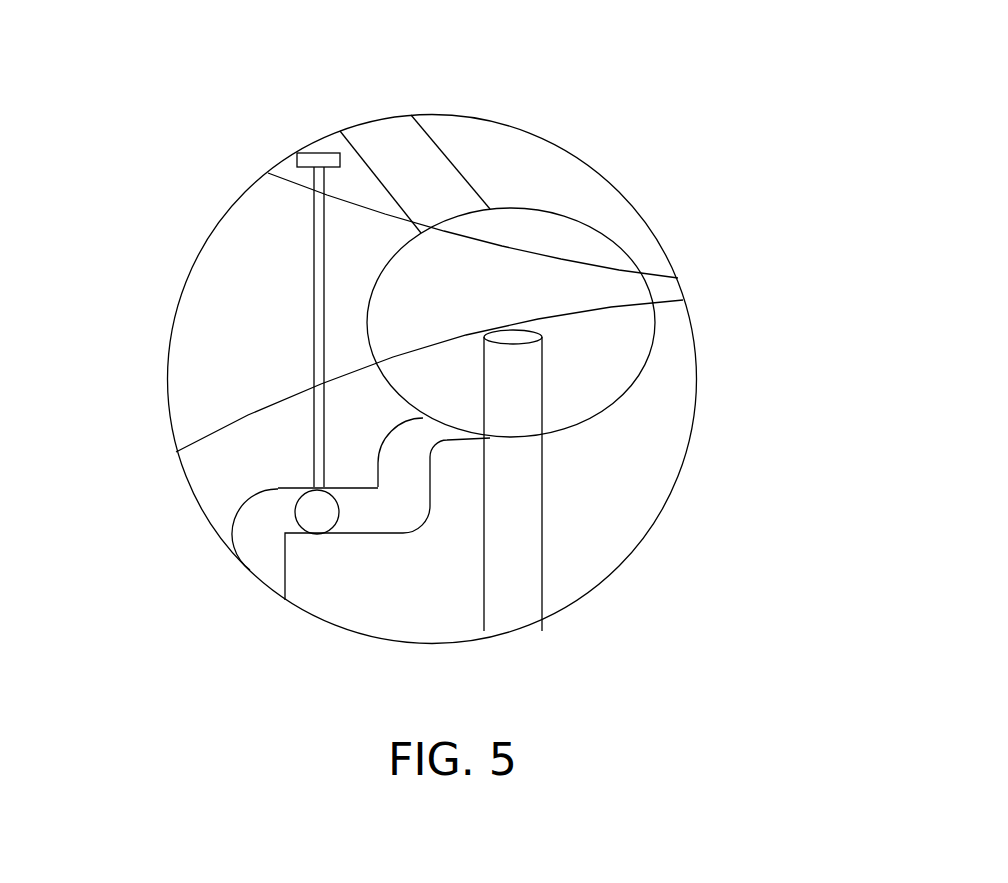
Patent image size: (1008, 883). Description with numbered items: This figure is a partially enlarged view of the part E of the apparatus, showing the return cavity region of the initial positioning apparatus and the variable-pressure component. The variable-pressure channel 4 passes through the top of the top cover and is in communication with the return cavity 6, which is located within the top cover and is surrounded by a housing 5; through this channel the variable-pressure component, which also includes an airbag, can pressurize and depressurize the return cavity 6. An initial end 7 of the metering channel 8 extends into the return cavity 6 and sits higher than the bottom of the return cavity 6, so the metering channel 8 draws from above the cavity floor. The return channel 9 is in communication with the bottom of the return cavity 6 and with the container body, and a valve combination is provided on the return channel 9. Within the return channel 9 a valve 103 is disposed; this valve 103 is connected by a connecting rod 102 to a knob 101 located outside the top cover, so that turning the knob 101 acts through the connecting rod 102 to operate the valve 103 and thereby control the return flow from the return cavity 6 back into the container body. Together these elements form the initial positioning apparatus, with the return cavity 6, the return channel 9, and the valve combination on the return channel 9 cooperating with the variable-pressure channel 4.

The part E is at (510, 379).
The variable-pressure channel 4 is at (473, 141).
The housing 5 is at (558, 263).
The return cavity 6 is at (504, 356).
The initial end 7 is at (604, 172).
The metering channel 8 is at (617, 511).
The return channel 9 is at (388, 562).
The knob 101 is at (251, 108).
The connecting rod 102 is at (213, 327).
The valve 103 is at (202, 448).